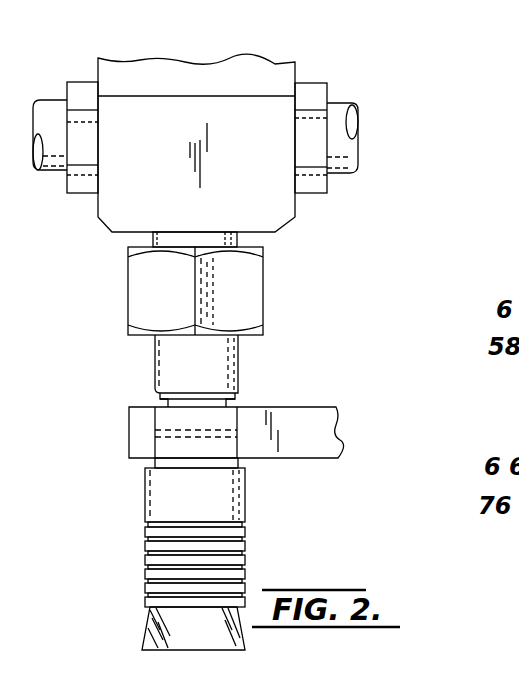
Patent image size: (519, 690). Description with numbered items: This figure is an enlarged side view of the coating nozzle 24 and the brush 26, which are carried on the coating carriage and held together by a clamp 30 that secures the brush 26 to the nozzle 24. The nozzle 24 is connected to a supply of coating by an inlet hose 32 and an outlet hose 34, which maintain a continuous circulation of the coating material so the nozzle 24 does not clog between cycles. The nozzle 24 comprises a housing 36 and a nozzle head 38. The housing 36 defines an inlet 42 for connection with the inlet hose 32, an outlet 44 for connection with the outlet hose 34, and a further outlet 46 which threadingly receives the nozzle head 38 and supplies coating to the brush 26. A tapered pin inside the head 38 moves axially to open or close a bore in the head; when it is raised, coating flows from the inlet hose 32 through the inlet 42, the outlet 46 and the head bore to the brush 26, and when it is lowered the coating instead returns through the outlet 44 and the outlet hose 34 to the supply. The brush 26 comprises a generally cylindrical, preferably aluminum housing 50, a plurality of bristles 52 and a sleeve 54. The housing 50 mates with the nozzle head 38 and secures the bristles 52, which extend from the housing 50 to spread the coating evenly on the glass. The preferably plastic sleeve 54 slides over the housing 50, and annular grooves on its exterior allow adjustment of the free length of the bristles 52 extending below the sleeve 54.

The nozzle 24 is at (178, 186).
The brush 26 is at (105, 538).
The clamp 30 is at (312, 417).
The inlet hose 32 is at (347, 123).
The outlet hose 34 is at (38, 100).
The housing 36 is at (267, 212).
The nozzle head 38 is at (167, 360).
The inlet 42 is at (293, 137).
The outlet 44 is at (100, 133).
The outlet 46 is at (190, 230).
The housing 50 is at (177, 457).
The bristles 52 is at (173, 632).
The sleeve 54 is at (222, 495).